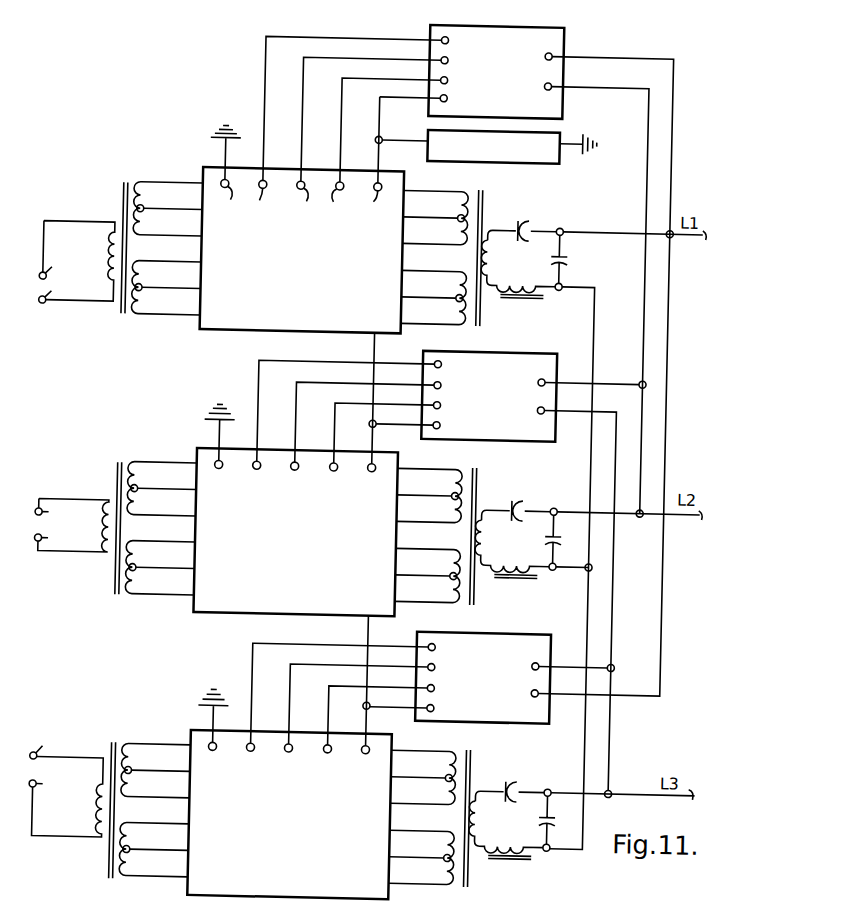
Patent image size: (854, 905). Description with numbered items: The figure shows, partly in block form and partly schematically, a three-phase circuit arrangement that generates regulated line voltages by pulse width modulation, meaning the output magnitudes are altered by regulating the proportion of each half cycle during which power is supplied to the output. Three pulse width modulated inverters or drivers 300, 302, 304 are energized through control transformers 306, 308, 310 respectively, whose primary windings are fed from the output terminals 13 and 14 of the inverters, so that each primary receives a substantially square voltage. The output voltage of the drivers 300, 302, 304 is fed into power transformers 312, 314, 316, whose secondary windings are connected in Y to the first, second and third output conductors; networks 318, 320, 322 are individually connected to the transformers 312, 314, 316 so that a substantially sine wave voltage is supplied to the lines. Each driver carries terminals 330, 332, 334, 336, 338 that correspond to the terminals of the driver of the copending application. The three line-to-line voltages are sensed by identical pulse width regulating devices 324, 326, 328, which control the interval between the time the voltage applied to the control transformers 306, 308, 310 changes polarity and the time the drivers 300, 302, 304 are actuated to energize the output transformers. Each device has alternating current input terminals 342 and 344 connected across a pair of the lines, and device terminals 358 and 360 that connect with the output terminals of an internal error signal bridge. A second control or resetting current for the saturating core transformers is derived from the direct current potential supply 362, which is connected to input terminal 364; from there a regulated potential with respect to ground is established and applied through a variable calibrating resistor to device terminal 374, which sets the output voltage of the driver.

The output terminal 13 is at (53, 510).
The output terminal 14 is at (53, 536).
The driver 300 is at (194, 329).
The driver 302 is at (190, 611).
The driver 304 is at (194, 887).
The control transformer 306 is at (100, 312).
The control transformer 308 is at (114, 588).
The control transformer 310 is at (115, 862).
The power transformer 312 is at (477, 311).
The power transformer 314 is at (477, 594).
The power transformer 316 is at (477, 870).
The network 318 is at (496, 264).
The network 320 is at (496, 544).
The network 322 is at (496, 825).
The pulse width regulating device 324 is at (547, 27).
The pulse width regulating device 326 is at (508, 439).
The pulse width regulating device 328 is at (515, 721).
The terminal 330 is at (350, 196).
The terminal 332 is at (248, 204).
The terminal 334 is at (291, 196).
The terminal 336 is at (226, 194).
The terminal 338 is at (340, 205).
The alternating current input terminal 342 is at (539, 377).
The alternating current input terminal 344 is at (540, 412).
The device terminal 358 is at (440, 60).
The device terminal 360 is at (446, 647).
The direct current potential supply 362 is at (495, 164).
The input terminal 364 is at (446, 425).
The device terminal 374 is at (446, 688).